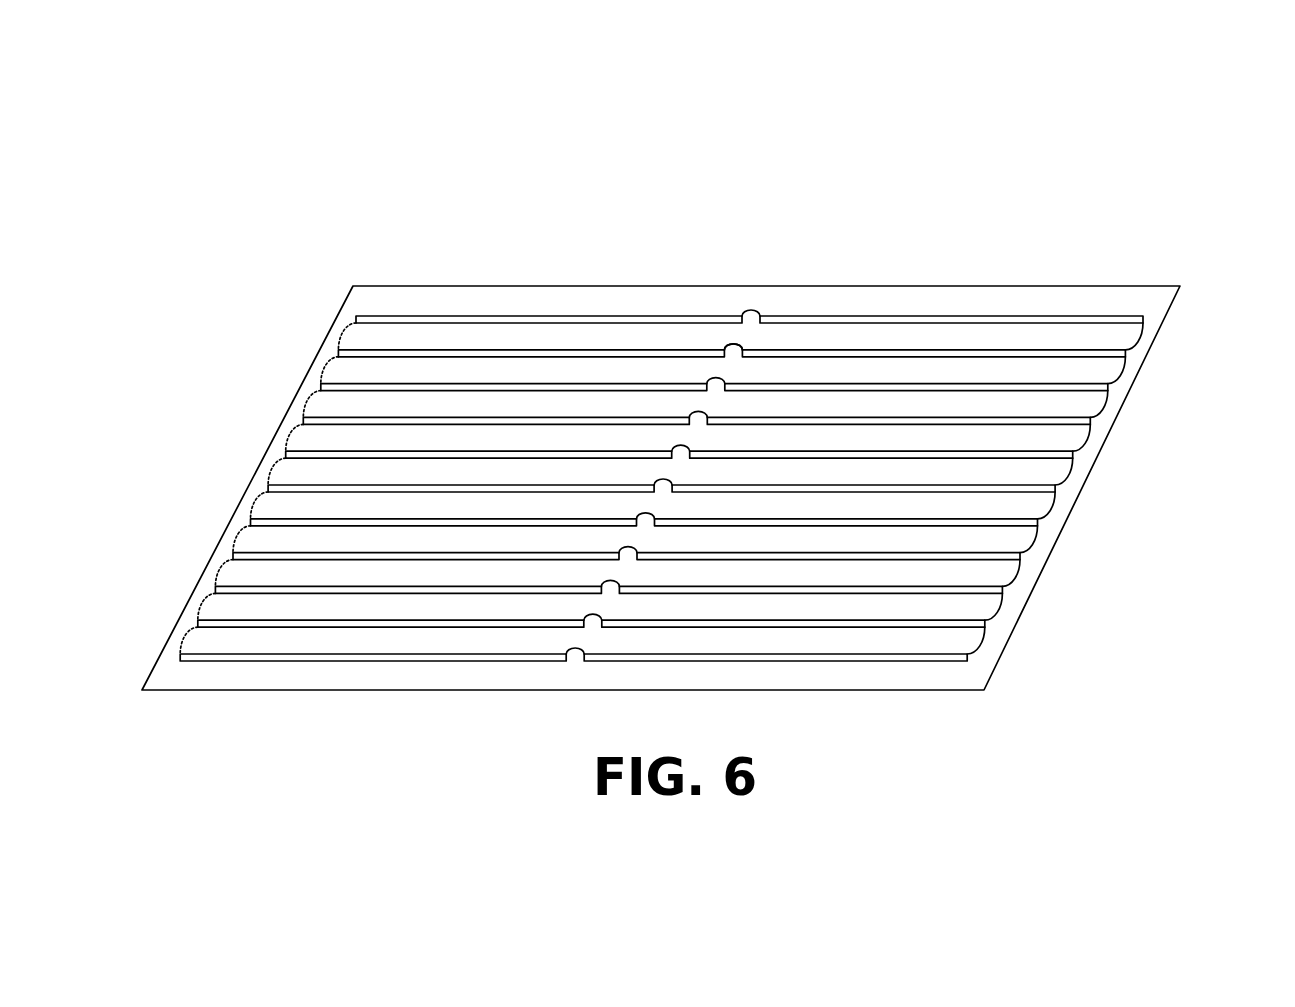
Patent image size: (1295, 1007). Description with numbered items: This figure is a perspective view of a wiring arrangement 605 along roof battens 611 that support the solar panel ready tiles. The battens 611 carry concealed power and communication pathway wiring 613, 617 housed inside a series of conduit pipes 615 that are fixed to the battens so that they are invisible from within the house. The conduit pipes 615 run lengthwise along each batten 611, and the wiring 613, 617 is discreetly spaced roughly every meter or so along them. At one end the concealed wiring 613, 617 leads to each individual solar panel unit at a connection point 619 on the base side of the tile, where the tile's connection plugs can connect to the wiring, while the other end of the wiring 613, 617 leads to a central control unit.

The thermal ground plane assembly 605 is at (711, 363).
The roof battens 611 is at (1119, 420).
The power and communication pathway wiring 613 is at (1041, 547).
The conduit pipes 615 is at (886, 314).
The power and communication pathway wiring 617 is at (750, 311).
The connection point 619 is at (752, 336).